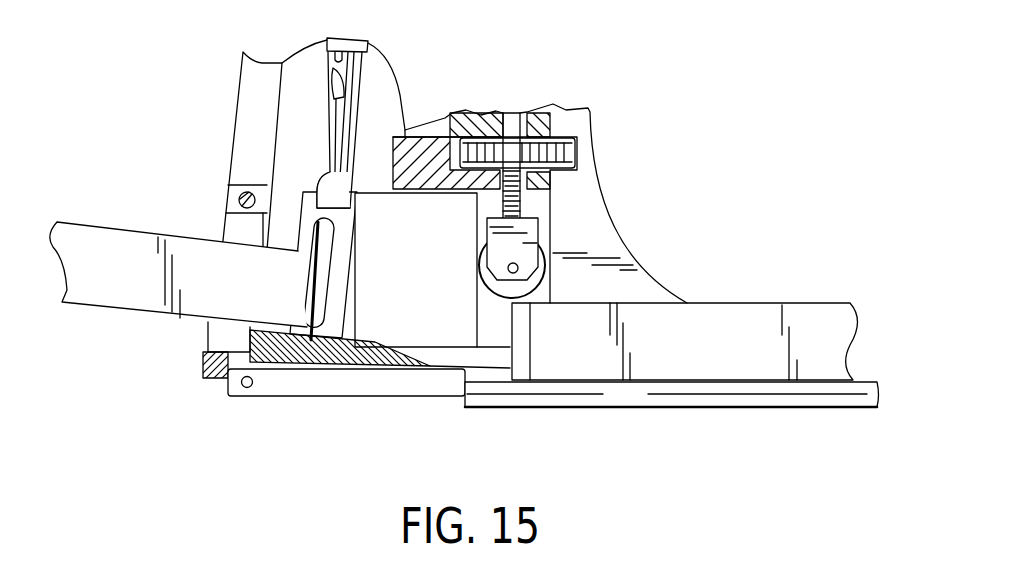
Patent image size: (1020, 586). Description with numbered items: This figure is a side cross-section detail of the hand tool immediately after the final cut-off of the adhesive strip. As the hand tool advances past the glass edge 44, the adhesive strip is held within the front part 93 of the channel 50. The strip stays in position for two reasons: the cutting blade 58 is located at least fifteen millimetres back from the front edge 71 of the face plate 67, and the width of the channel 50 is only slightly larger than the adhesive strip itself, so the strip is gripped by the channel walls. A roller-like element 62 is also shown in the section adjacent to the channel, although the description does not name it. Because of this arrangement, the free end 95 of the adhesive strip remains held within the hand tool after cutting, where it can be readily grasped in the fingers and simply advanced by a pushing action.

The glass edge 44 is at (463, 382).
The channel 50 is at (432, 303).
The cutting blade 58 is at (317, 230).
The roller 62 is at (543, 268).
The face plate 67 is at (253, 102).
The front edge 71 is at (208, 337).
The front part 93 is at (240, 230).
The free end 95 is at (257, 294).